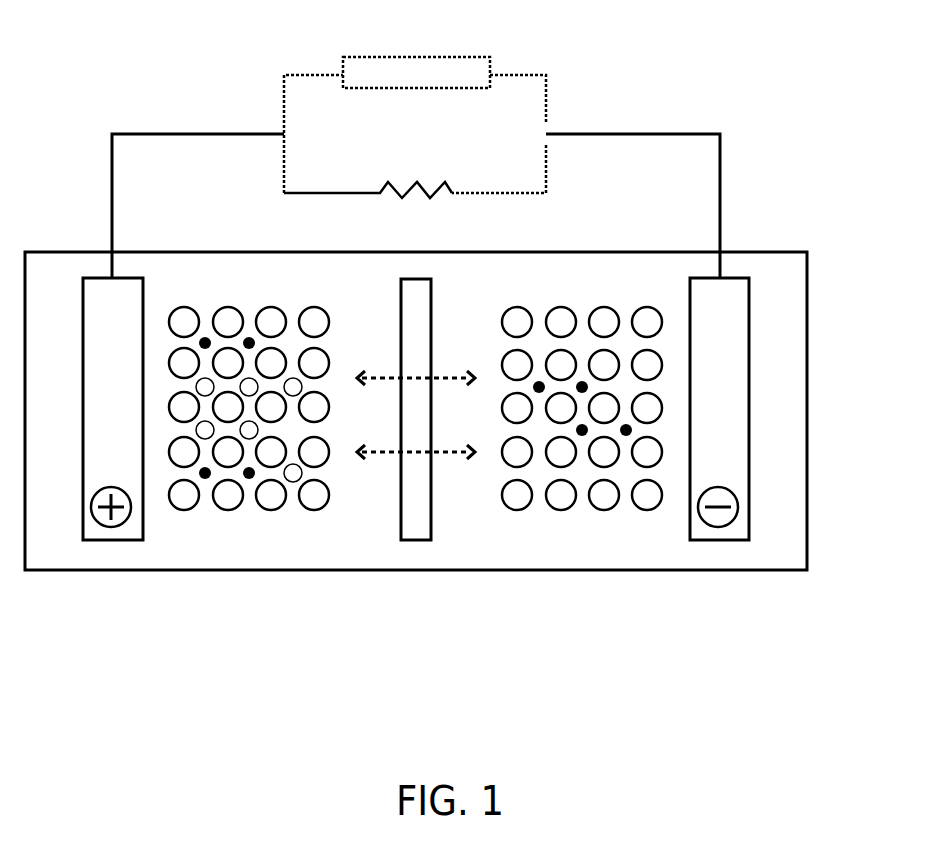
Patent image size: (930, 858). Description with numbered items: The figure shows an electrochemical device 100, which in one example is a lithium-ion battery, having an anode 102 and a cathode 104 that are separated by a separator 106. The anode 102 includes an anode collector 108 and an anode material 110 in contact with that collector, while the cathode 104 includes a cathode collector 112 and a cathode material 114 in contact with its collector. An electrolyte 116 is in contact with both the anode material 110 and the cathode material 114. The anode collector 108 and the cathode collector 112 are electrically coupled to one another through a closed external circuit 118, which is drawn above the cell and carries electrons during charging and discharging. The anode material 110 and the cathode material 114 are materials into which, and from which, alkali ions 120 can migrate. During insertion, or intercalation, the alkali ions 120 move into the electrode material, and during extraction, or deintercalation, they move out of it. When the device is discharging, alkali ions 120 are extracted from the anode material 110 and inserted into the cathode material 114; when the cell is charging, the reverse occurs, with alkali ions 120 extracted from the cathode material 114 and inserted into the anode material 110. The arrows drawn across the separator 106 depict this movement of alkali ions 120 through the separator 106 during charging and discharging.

The electrochemical device 100 is at (198, 58).
The anode 102 is at (589, 556).
The cathode 104 is at (221, 425).
The separator 106 is at (412, 540).
The anode collector 108 is at (730, 278).
The anode material 110 is at (578, 425).
The cathode collector 112 is at (103, 278).
The cathode material 114 is at (285, 283).
The electrolyte 116 is at (455, 294).
The closed external circuit 118 is at (708, 130).
The alkali ions 120 is at (539, 389).